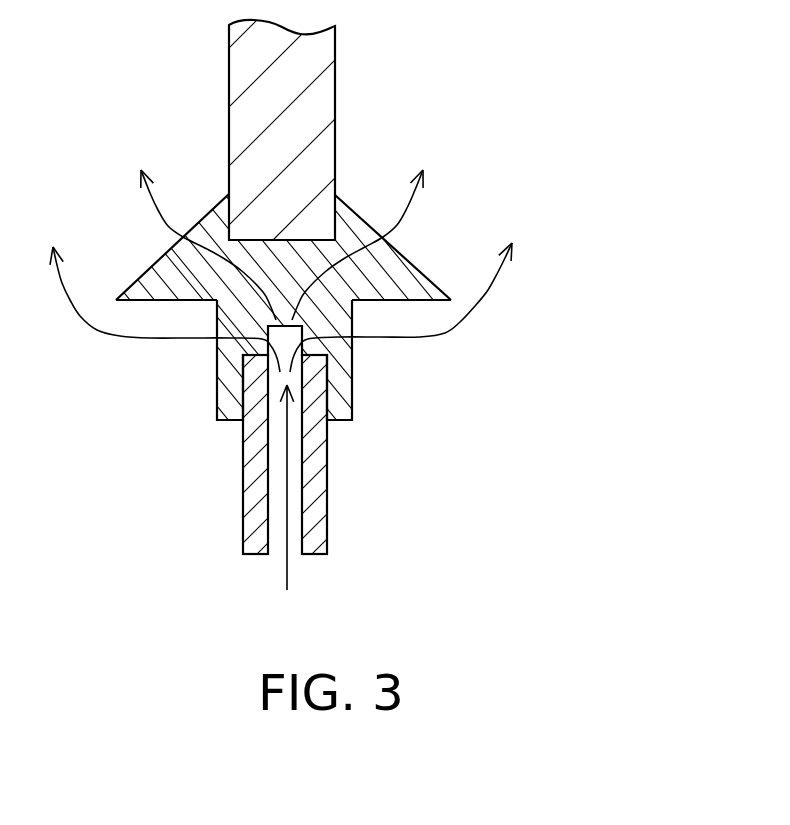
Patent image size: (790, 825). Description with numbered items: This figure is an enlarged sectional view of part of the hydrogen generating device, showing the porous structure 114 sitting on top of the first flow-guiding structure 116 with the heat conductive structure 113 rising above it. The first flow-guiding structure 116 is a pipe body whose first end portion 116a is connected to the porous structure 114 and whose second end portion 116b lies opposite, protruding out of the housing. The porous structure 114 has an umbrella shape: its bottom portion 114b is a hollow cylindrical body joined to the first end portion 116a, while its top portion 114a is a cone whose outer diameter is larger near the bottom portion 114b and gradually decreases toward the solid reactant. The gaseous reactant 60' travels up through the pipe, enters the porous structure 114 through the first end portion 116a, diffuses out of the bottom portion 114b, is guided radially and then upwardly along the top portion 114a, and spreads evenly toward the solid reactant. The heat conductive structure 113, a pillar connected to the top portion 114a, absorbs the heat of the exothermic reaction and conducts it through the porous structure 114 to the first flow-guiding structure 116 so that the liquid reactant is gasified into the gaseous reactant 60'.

The heat conductive structure 113 is at (327, 85).
The porous structure 114 is at (348, 285).
The top portion 114a is at (400, 273).
The bottom portion 114b is at (343, 362).
The first flow-guiding structure 116 is at (325, 455).
The first end portion 116a is at (317, 393).
The second end portion 116b is at (315, 542).
The gaseous reactant 60' is at (281, 380).